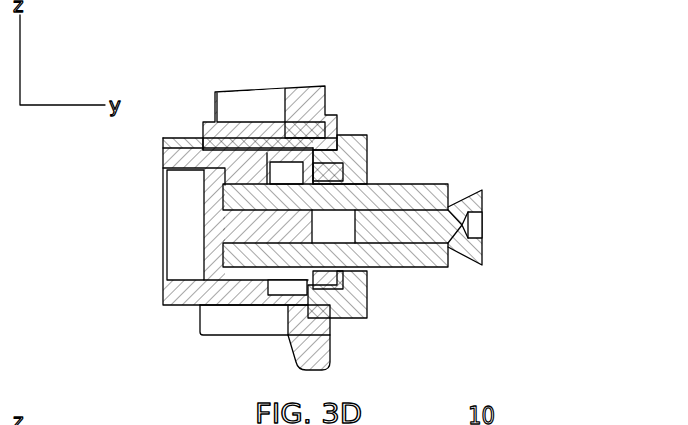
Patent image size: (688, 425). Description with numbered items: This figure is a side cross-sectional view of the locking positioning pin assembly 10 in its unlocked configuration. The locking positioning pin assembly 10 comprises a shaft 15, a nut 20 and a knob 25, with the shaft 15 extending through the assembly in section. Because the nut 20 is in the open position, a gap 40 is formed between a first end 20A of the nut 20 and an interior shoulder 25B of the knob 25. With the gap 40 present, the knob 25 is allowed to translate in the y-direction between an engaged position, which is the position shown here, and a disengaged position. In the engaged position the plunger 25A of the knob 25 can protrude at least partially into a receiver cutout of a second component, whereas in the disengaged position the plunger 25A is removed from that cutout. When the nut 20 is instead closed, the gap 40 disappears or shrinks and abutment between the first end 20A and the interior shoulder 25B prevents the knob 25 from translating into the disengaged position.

The locking positioning pin assembly 10 is at (412, 67).
The shaft 15 is at (435, 192).
The nut 20 is at (200, 160).
The first end of nut 20A is at (276, 292).
The knob 25 is at (242, 132).
The plunger 25A is at (352, 168).
The interior shoulder of knob 25B is at (308, 297).
The gap 40 is at (304, 151).